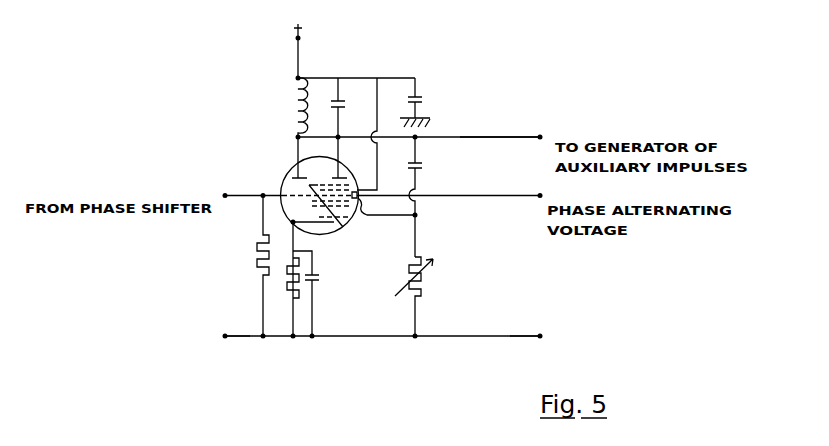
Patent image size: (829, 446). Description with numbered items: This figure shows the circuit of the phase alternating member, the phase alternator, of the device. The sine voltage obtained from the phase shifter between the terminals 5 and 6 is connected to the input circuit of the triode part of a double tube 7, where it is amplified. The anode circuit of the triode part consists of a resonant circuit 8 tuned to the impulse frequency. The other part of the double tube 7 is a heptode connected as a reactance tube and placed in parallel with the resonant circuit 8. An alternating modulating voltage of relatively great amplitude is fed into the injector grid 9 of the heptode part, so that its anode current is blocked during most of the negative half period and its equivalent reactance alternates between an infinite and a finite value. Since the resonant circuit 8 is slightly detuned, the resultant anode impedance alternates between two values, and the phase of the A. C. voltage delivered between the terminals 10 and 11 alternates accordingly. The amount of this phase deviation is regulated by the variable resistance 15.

The terminal 5 is at (253, 211).
The terminal 6 is at (237, 326).
The double tube 7 is at (290, 172).
The resonant circuit 8 is at (291, 107).
The injector grid 9 is at (388, 222).
The terminal 10 is at (504, 154).
The terminal 11 is at (529, 326).
The variable resistance 15 is at (423, 296).